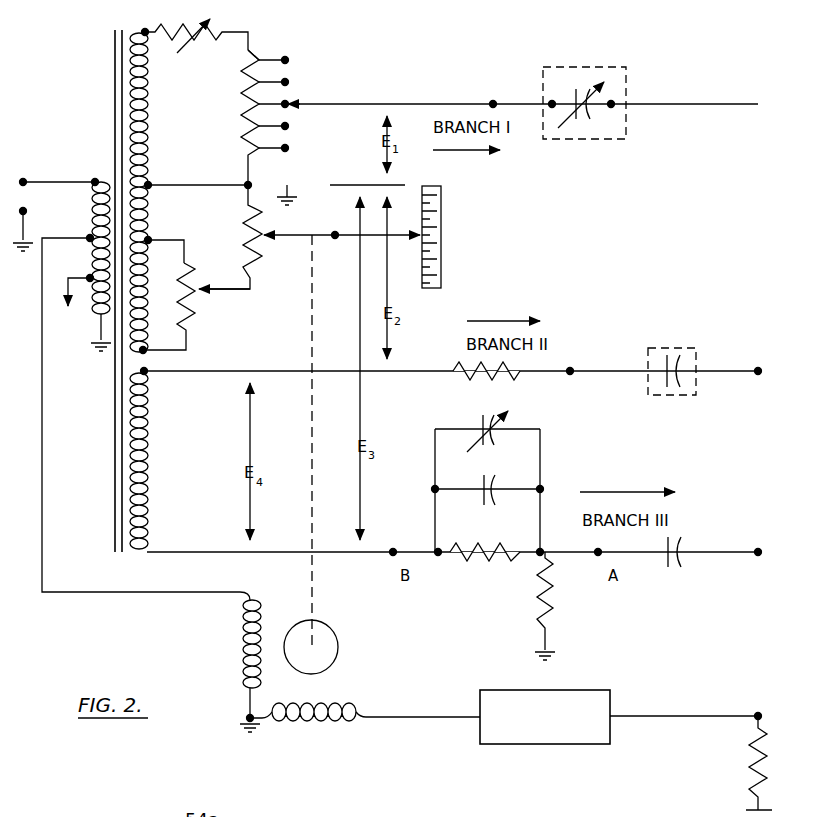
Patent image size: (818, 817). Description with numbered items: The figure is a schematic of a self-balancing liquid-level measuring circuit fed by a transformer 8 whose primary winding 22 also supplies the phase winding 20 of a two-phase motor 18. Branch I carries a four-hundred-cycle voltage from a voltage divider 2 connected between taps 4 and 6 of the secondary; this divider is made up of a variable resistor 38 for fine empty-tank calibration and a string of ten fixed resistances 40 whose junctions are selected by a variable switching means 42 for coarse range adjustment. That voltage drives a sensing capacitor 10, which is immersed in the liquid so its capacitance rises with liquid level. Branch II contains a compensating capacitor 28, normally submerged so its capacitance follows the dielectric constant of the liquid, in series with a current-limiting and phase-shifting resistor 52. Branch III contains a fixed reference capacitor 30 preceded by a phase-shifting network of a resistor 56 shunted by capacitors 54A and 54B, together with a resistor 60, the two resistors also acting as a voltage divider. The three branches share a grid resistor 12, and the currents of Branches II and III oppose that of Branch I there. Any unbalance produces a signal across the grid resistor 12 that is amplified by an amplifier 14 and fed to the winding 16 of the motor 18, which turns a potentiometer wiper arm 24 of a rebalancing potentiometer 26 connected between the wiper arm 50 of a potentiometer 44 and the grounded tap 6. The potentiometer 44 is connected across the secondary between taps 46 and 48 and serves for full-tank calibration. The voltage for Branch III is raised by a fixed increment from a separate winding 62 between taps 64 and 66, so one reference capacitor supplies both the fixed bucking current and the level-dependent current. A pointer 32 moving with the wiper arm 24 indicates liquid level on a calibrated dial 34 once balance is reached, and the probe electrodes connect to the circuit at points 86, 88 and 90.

The voltage divider 2 is at (252, 50).
The tap 4 is at (149, 38).
The tap 6 is at (149, 183).
The transformer 8 is at (118, 519).
The sensing capacitor 10 is at (572, 98).
The grid resistor 12 is at (752, 752).
The amplifier 14 is at (575, 745).
The winding 16 is at (312, 721).
The two-phase motor 18 is at (339, 648).
The phase winding 20 is at (244, 656).
The primary winding 22 is at (93, 178).
The potentiometer wiper arm 24 is at (267, 237).
The potentiometer 26 is at (253, 237).
The capacitor 28 is at (664, 360).
The reference capacitor 30 is at (681, 562).
The pointer 32 is at (416, 236).
The calibrated dial 34 is at (445, 240).
The variable resistor 38 is at (204, 42).
The fixed resistances 40 is at (240, 100).
The variable switching means 42 is at (292, 103).
The potentiometer 44 is at (199, 316).
The tap 46 is at (150, 238).
The tap 48 is at (148, 348).
The wiper arm 50 is at (205, 284).
The resistor 52 is at (484, 380).
The capacitor 54A is at (494, 440).
The capacitor 54B is at (496, 500).
The resistor 56 is at (483, 556).
The resistor 60 is at (556, 600).
The winding 62 is at (151, 456).
The tap 64 is at (150, 376).
The tap 66 is at (152, 548).
The point 86 is at (491, 100).
The point 88 is at (762, 368).
The point 90 is at (571, 374).